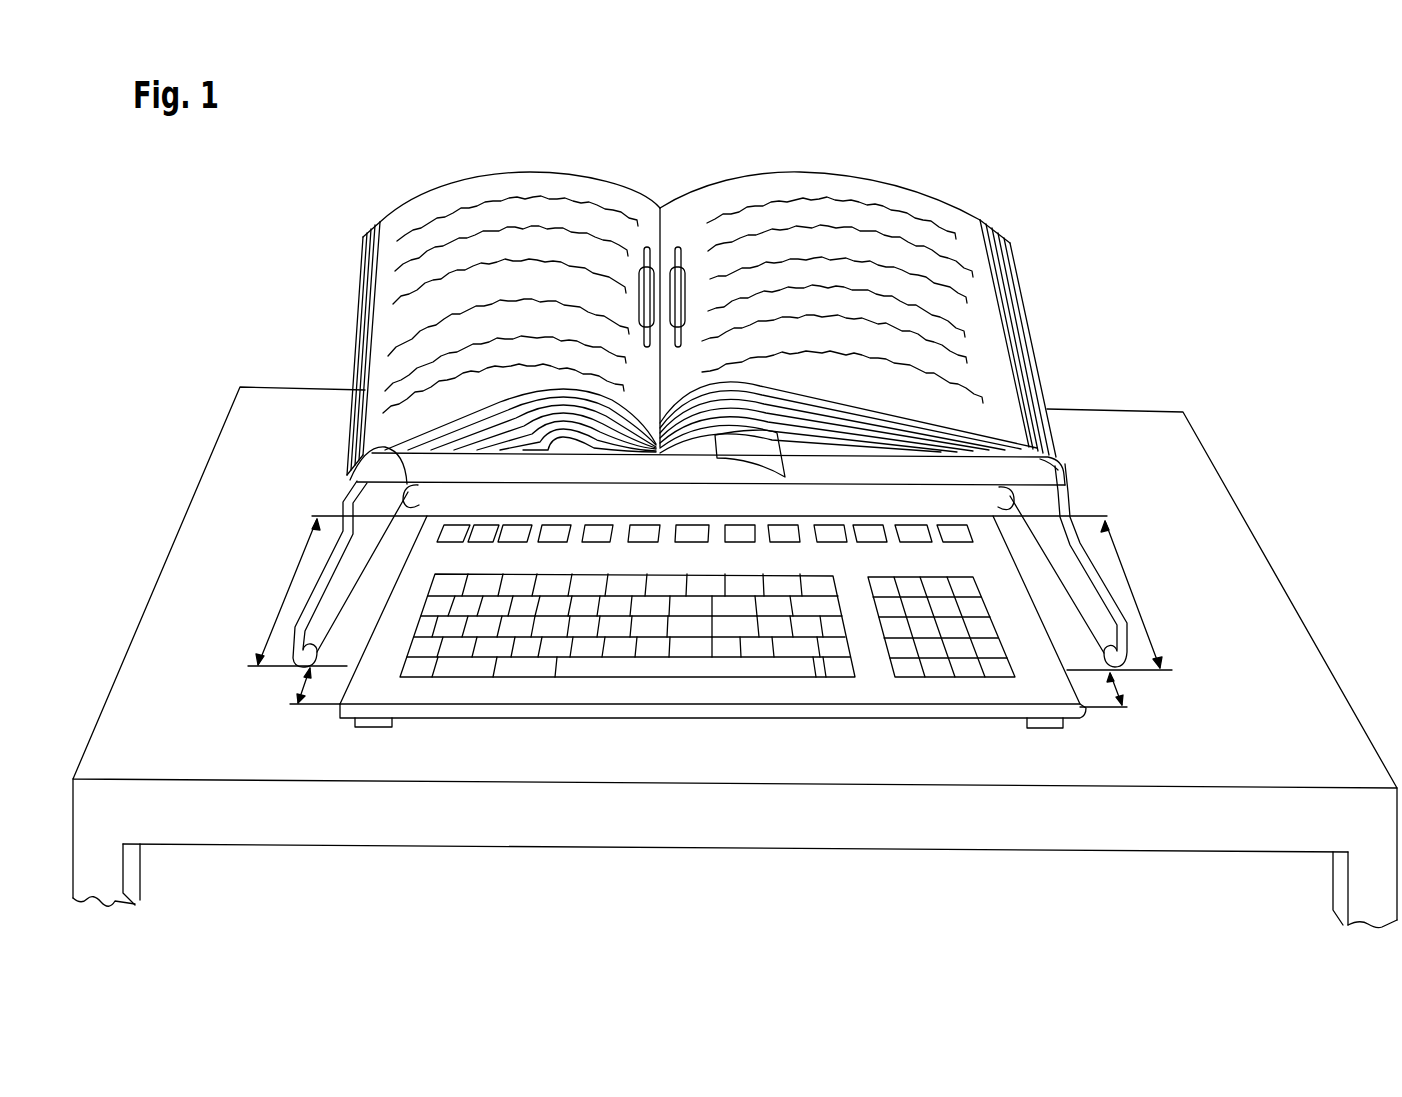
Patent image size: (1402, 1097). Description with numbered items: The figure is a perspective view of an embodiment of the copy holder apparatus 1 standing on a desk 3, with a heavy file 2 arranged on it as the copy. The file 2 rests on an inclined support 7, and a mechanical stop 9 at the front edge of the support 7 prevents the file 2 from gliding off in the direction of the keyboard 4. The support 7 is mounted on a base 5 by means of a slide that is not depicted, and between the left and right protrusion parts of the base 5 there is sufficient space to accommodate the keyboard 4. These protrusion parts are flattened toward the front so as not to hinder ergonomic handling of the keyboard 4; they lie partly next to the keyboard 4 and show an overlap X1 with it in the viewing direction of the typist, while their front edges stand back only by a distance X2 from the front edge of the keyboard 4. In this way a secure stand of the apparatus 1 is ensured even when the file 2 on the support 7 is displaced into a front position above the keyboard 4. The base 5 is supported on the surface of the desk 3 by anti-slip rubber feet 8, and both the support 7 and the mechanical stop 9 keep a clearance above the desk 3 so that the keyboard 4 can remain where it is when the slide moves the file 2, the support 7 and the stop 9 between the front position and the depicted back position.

The apparatus 1 is at (225, 498).
The file 2 is at (906, 206).
The desk 3 is at (162, 652).
The keyboard 4 is at (870, 696).
The base 5 is at (343, 504).
The support 7 is at (1047, 407).
The anti-slip rubber feet 8 is at (373, 452).
The mechanical stop 9 is at (1050, 450).
The overlap X1 is at (711, 594).
The distance X2 is at (711, 687).